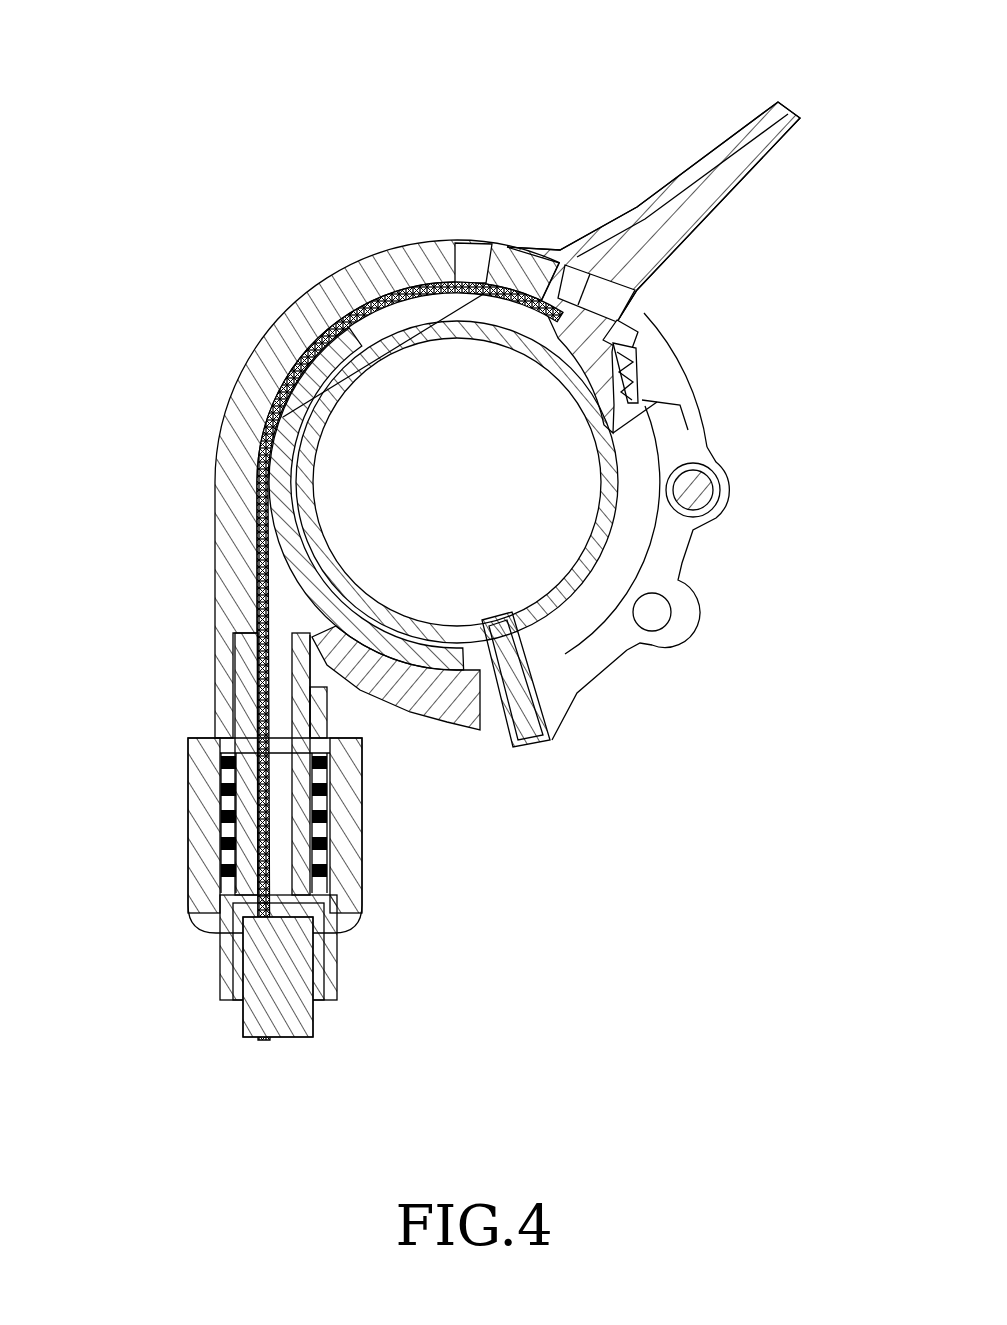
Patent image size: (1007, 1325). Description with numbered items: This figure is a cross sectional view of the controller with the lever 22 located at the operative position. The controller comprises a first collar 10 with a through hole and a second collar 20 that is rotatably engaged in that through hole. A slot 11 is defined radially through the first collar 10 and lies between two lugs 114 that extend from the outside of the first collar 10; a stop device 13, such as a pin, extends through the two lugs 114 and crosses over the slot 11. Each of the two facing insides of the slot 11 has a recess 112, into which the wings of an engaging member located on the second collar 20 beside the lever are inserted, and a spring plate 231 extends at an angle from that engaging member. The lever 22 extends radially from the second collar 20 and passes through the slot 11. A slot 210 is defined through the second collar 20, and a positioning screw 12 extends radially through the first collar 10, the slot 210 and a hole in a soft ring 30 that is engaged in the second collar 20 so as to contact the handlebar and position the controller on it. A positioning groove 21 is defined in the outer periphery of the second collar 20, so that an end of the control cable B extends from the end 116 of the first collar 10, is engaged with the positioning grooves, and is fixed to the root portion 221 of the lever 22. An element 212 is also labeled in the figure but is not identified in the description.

The first collar 10 is at (232, 452).
The slot 11 is at (466, 240).
The positioning screw 12 is at (530, 742).
The stop device 13 is at (700, 508).
The second collar 20 is at (432, 715).
The positioning groove 21 is at (310, 385).
The lever 22 is at (775, 103).
The soft ring 30 is at (270, 517).
The recess 112 is at (636, 338).
The lugs 114 is at (724, 482).
The end of the first collar 116 is at (215, 672).
The slot 210 is at (640, 517).
The seat 212 is at (686, 398).
The root portion 221 is at (514, 262).
The spring plate 231 is at (645, 392).
The control cable B is at (302, 1040).